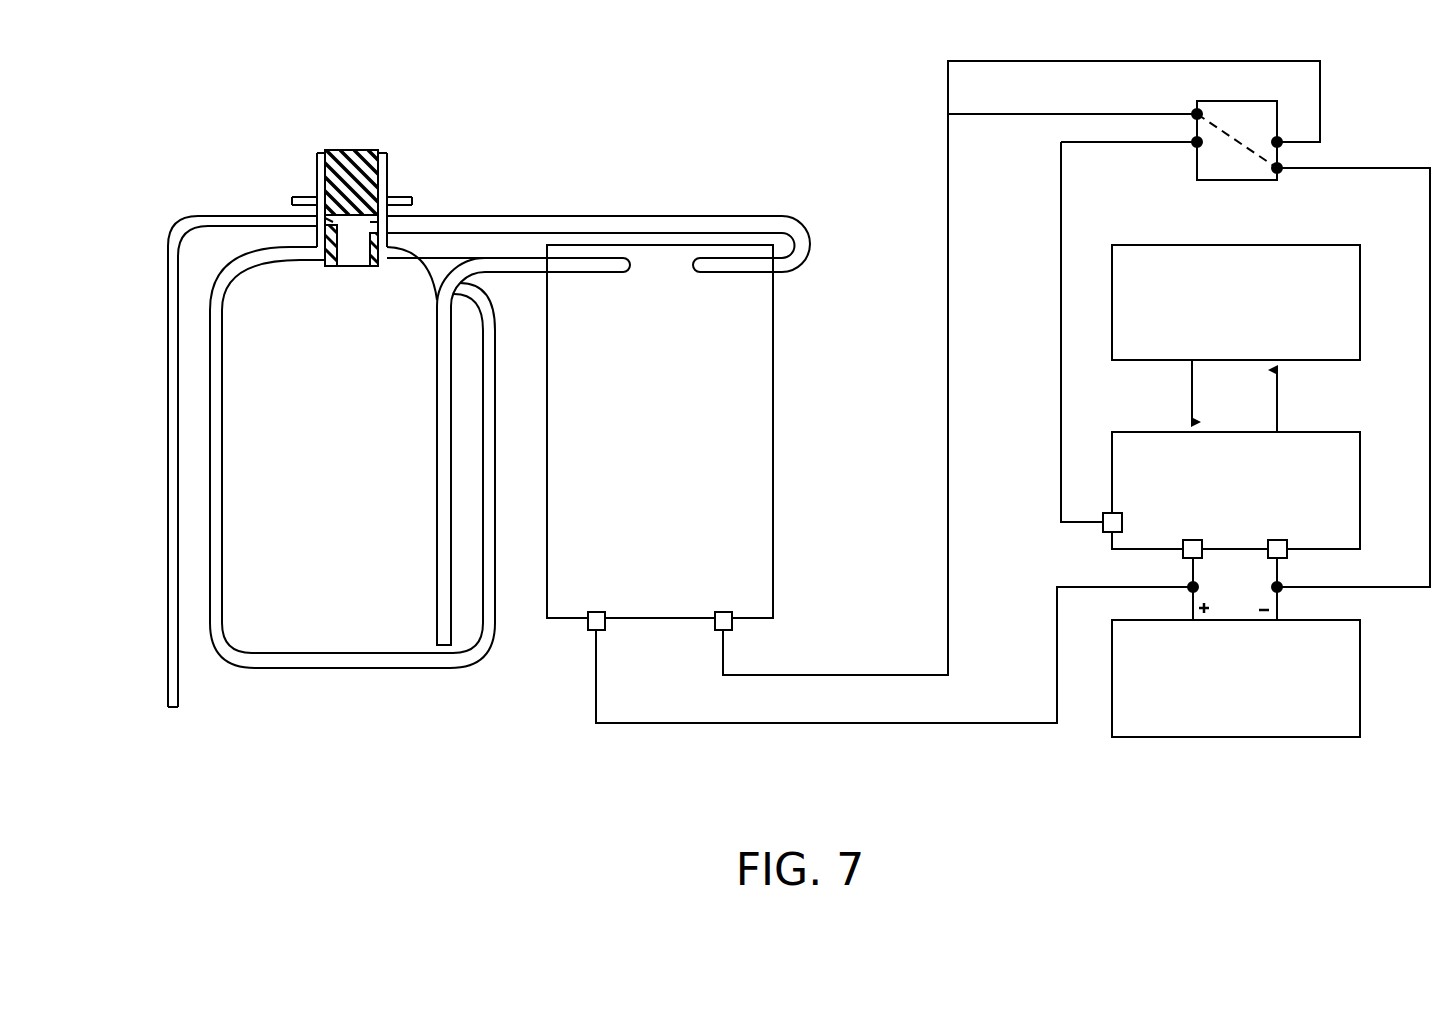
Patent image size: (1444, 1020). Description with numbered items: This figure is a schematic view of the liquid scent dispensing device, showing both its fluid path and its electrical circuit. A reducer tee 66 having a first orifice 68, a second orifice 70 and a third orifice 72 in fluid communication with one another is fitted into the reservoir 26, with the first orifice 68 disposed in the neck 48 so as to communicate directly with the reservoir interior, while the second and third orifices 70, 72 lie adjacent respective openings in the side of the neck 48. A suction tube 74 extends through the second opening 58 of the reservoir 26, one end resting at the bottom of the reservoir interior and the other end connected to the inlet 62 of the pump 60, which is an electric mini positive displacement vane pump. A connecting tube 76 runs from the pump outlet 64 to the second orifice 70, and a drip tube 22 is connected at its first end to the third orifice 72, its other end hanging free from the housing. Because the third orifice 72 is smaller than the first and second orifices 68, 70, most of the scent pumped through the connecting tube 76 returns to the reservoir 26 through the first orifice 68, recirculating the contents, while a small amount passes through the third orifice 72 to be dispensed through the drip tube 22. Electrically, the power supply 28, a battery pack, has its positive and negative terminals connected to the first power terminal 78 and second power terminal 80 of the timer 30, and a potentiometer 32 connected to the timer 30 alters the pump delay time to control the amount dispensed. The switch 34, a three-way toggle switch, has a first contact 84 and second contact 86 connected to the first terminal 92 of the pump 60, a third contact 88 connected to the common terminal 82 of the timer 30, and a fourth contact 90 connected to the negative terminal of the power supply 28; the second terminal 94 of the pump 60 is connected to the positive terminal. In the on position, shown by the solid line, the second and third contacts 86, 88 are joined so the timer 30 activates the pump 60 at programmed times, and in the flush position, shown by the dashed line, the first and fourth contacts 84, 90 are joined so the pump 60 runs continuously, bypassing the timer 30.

The drip tube 22 is at (168, 520).
The reservoir 26 is at (490, 630).
The power supply 28 is at (1360, 702).
The timer 30 is at (1360, 478).
The potentiometer 32 is at (1360, 273).
The switch 34 is at (1233, 182).
The neck 48 is at (317, 183).
The second opening 58 is at (467, 263).
The pump 60 is at (760, 498).
The inlet 62 is at (628, 277).
The outlet 64 is at (688, 277).
The reducer tee 66 is at (372, 150).
The first orifice 68 is at (356, 268).
The second orifice 70 is at (382, 226).
The third orifice 72 is at (323, 218).
The suction tube 74 is at (528, 273).
The connecting tube 76 is at (640, 215).
The first power terminal 78 is at (1183, 560).
The second power terminal 80 is at (1288, 557).
The common terminal 82 is at (1105, 513).
The first contact 84 is at (1195, 113).
The second contact 86 is at (1277, 140).
The third contact 88 is at (1196, 142).
The fourth contact 90 is at (1279, 169).
The first terminal 92 is at (732, 627).
The second terminal 94 is at (588, 628).